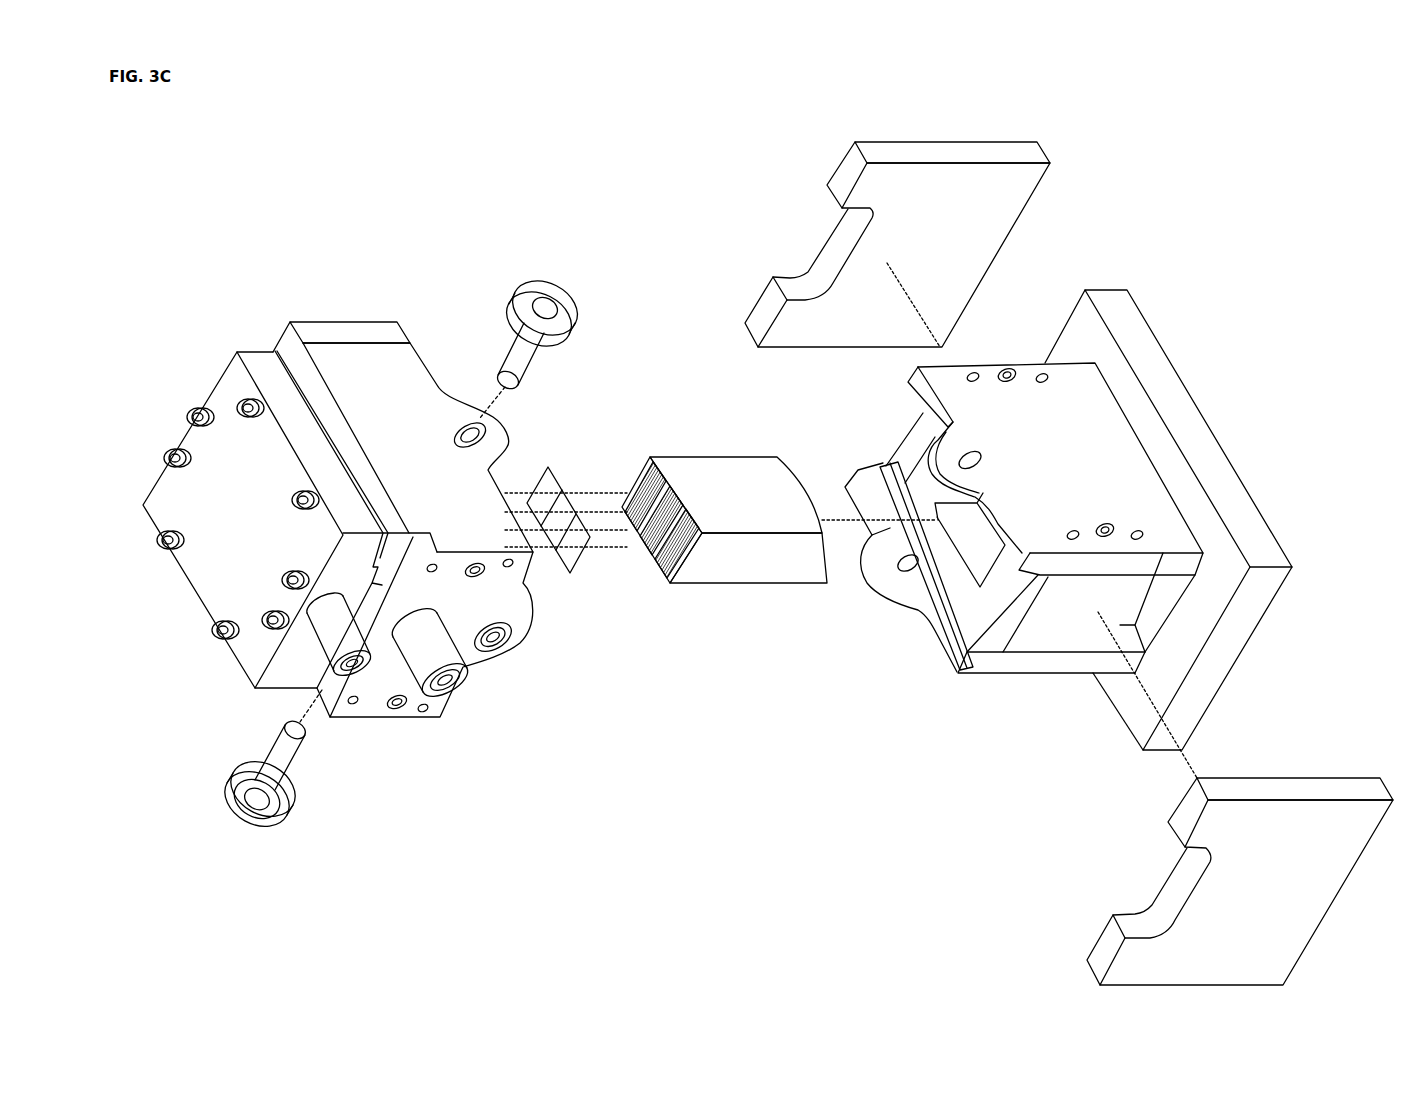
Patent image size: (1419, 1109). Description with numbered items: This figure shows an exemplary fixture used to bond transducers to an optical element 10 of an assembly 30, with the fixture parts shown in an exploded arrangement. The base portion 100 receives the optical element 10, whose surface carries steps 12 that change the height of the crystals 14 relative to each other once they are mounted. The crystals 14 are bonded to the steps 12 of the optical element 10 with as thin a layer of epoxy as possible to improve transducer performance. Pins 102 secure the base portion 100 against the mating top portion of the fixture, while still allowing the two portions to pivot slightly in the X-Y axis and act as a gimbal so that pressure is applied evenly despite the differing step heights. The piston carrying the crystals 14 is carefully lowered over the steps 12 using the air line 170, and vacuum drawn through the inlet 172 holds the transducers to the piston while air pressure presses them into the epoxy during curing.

The optical element 10 is at (719, 538).
The steps 12 is at (647, 499).
The crystals 14 is at (568, 551).
The assembly 30 is at (732, 556).
The base portion 100 is at (1024, 518).
The pins 102 is at (401, 532).
The air line 170 is at (290, 534).
The inlet 172 is at (410, 529).